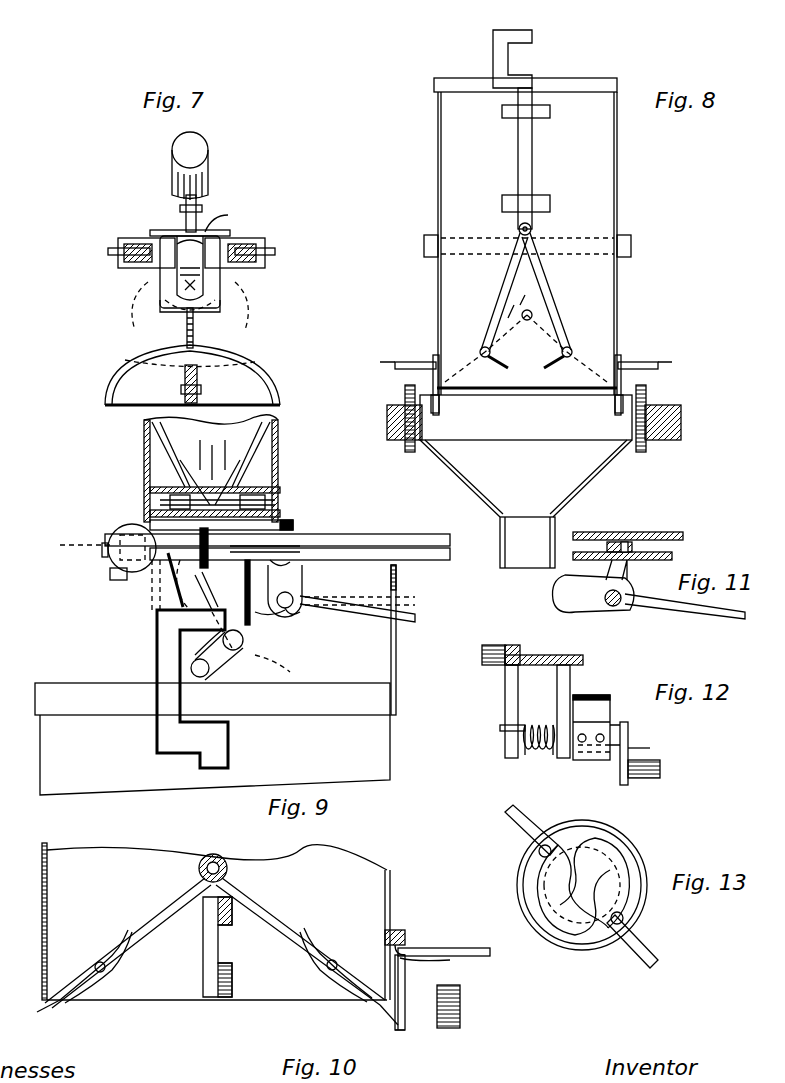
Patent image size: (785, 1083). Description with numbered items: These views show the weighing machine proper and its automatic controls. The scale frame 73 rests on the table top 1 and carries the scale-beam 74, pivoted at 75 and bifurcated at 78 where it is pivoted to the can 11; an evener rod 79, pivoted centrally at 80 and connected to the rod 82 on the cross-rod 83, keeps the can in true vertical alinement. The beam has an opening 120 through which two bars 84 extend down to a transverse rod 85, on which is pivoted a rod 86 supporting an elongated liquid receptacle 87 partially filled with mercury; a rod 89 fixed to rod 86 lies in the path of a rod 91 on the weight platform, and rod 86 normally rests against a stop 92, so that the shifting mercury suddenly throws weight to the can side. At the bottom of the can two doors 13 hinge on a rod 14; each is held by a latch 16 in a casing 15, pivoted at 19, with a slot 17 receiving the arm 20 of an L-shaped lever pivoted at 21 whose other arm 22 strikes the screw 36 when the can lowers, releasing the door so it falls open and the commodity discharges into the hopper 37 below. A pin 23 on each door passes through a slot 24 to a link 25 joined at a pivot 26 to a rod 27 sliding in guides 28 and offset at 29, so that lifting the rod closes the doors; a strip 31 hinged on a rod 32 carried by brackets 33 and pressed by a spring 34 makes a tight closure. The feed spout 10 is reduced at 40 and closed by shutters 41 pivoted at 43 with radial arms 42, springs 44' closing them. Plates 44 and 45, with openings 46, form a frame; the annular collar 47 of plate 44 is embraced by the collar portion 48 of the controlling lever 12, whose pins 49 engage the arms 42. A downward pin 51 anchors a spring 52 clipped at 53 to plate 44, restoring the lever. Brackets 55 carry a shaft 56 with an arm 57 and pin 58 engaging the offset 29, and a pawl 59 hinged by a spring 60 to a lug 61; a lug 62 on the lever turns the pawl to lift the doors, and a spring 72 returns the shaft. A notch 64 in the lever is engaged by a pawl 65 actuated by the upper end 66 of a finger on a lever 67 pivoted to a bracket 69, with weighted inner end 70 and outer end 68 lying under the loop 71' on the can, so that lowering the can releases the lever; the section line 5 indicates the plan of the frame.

In FIG. 8, the table top 1 is at (681, 430).
In FIG. 9, the line 5 is at (70, 545).
In FIG. 9, the feed spout 10 is at (278, 425).
In FIG. 13, the feed spout 10 is at (630, 840).
In FIG. 8, the weighing receptacle 11 is at (617, 158).
In FIG. 9, the weighing receptacle 11 is at (40, 735).
In FIG. 10, the weighing receptacle 11 is at (42, 885).
In FIG. 9, the lever 12 is at (150, 600).
In FIG. 8, the doors 13 is at (455, 355).
In FIG. 10, the doors 13 is at (282, 882).
In FIG. 8, the rod 14 is at (532, 312).
In FIG. 10, the rod 14 is at (215, 862).
In FIG. 8, the casing 15 is at (435, 362).
In FIG. 10, the casing 15 is at (405, 930).
In FIG. 10, the latch 16 is at (380, 1008).
In FIG. 10, the slot 17 is at (405, 962).
In FIG. 10, the pivot 19 is at (400, 1030).
In FIG. 10, the arm 20 is at (438, 965).
In FIG. 10, the pivot 21 is at (405, 950).
In FIG. 8, the arm 22 is at (395, 370).
In FIG. 10, the arm 22 is at (485, 948).
In FIG. 8, the pin 23 is at (482, 350).
In FIG. 8, the slot 24 is at (520, 362).
In FIG. 8, the link 25 is at (519, 304).
In FIG. 8, the pivot 26 is at (532, 229).
In FIG. 8, the rod 27 is at (532, 185).
In FIG. 9, the rod 27 is at (228, 768).
In FIG. 8, the guides 28 is at (548, 118).
In FIG. 8, the offset 29 is at (512, 49).
In FIG. 9, the offset 29 is at (215, 640).
In FIG. 10, the strip 31 is at (60, 1002).
In FIG. 10, the rod 32 is at (97, 963).
In FIG. 10, the brackets 33 is at (120, 962).
In FIG. 10, the spring 34 is at (120, 970).
In FIG. 8, the screw 36 is at (408, 452).
In FIG. 10, the screw 36 is at (462, 990).
In FIG. 8, the hopper 37 is at (578, 478).
In FIG. 9, the reduced lower end 40 is at (160, 470).
In FIG. 13, the reduced lower end 40 is at (620, 905).
In FIG. 9, the shutters 41 is at (272, 514).
In FIG. 13, the shutters 41 is at (625, 858).
In FIG. 9, the radial arms 42 is at (130, 512).
In FIG. 13, the radial arms 42 is at (535, 818).
In FIG. 9, the pivot 43 is at (270, 505).
In FIG. 13, the pivot 43 is at (538, 850).
In FIG. 9, the plate 44 is at (300, 567).
In FIG. 11, the plate 44 is at (642, 553).
In FIG. 12, the plate 44 is at (564, 660).
In FIG. 9, the springs 44' is at (221, 484).
In FIG. 9, the plate 45 is at (392, 524).
In FIG. 11, the plate 45 is at (628, 528).
In FIG. 12, the openings 46 is at (485, 668).
In FIG. 12, the annular collar 47 is at (520, 650).
In FIG. 9, the collar portion 48 is at (185, 600).
In FIG. 9, the pins 49 is at (150, 508).
In FIG. 9, the pin 51 is at (120, 584).
In FIG. 9, the spring 52 is at (115, 575).
In FIG. 9, the clip 53 is at (250, 612).
In FIG. 9, the brackets 55 is at (243, 640).
In FIG. 12, the brackets 55 is at (557, 697).
In FIG. 9, the shaft 56 is at (238, 650).
In FIG. 12, the shaft 56 is at (628, 740).
In FIG. 9, the arm 57 is at (225, 660).
In FIG. 12, the arm 57 is at (640, 752).
In FIG. 9, the pin 58 is at (191, 668).
In FIG. 12, the pin 58 is at (660, 770).
In FIG. 9, the pawl 59 is at (230, 632).
In FIG. 12, the pawl 59 is at (600, 695).
In FIG. 9, the spring 60 is at (200, 660).
In FIG. 12, the spring 60 is at (590, 765).
In FIG. 9, the lug 61 is at (280, 660).
In FIG. 9, the lug 62 is at (160, 620).
In FIG. 9, the notch 64 is at (300, 540).
In FIG. 9, the pawl 65 is at (300, 548).
In FIG. 11, the pawl 65 is at (612, 545).
In FIG. 11, the upper end of finger 66 is at (625, 545).
In FIG. 9, the lever 67 is at (295, 610).
In FIG. 11, the lever 67 is at (612, 610).
In FIG. 9, the outer end 68 is at (415, 618).
In FIG. 11, the outer end 68 is at (690, 614).
In FIG. 9, the bracket 69 is at (300, 588).
In FIG. 11, the bracket 69 is at (628, 575).
In FIG. 9, the inner end 70 is at (275, 612).
In FIG. 11, the inner end 70 is at (555, 585).
In FIG. 9, the loop 71' is at (412, 640).
In FIG. 12, the spring 72 is at (540, 728).
In FIG. 7, the frame 73 is at (192, 374).
In FIG. 7, the scale-beam 74 is at (210, 236).
In FIG. 7, the pivot 75 is at (265, 250).
In FIG. 8, the bifurcated end 78 is at (424, 246).
In FIG. 7, the evener rod 79 is at (182, 398).
In FIG. 10, the evener rod 79 is at (232, 977).
In FIG. 7, the pivot 80 is at (198, 388).
In FIG. 10, the rod 82 is at (218, 940).
In FIG. 10, the cross-rod 83 is at (232, 916).
In FIG. 7, the bars 84 is at (165, 295).
In FIG. 7, the transverse rod 85 is at (185, 310).
In FIG. 7, the rod 86 is at (202, 225).
In FIG. 7, the liquid receptacle 87 is at (213, 158).
In FIG. 7, the rod 89 is at (200, 335).
In FIG. 7, the rod 91 is at (150, 281).
In FIG. 7, the stop 92 is at (215, 225).
In FIG. 7, the opening 120 is at (175, 240).